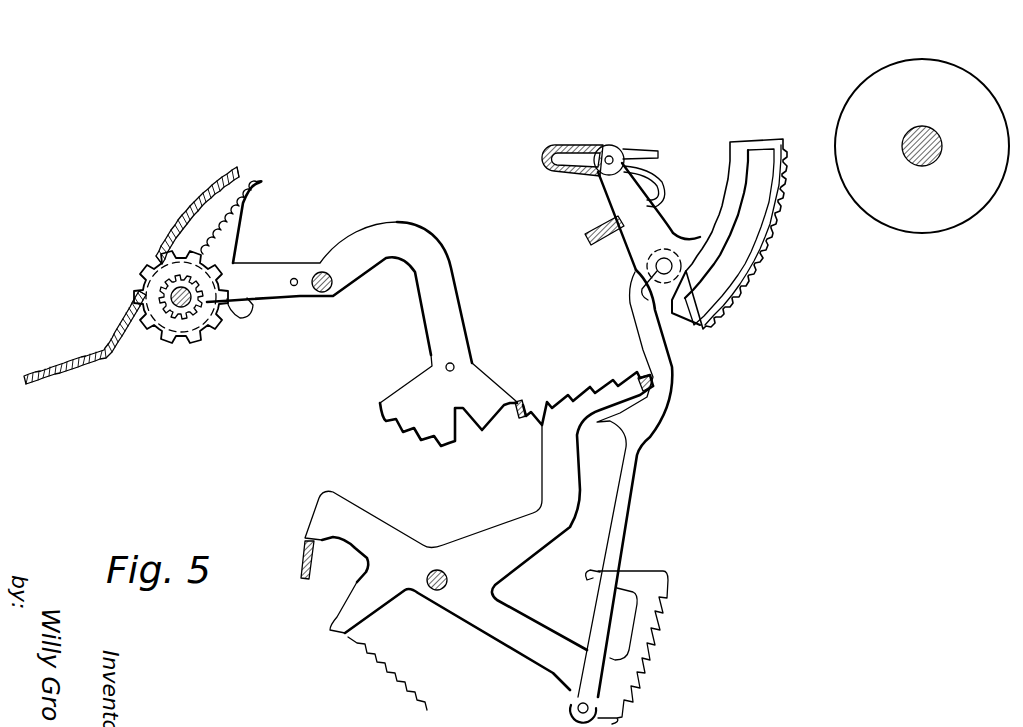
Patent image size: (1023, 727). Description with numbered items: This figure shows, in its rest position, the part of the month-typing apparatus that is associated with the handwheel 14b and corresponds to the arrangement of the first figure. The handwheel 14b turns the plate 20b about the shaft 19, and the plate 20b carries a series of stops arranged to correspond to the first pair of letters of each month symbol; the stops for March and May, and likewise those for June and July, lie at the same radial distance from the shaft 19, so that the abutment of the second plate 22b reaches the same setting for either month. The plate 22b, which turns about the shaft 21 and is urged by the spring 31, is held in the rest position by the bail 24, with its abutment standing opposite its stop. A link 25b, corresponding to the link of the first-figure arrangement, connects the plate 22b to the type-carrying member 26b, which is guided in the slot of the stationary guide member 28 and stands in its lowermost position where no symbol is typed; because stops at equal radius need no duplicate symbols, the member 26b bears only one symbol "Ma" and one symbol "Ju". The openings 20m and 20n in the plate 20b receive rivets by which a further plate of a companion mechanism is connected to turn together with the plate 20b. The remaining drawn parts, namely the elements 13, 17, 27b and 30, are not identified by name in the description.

The pinion 13 is at (183, 285).
The handwheel 14b is at (158, 333).
The pawl 17 is at (241, 312).
The shaft 19 is at (322, 293).
The plate 20b is at (453, 325).
The opening 20m is at (294, 278).
The opening 20n is at (445, 367).
The shaft 21 is at (433, 591).
The plate 22b is at (478, 540).
The bail 24 is at (306, 548).
The lever 25b is at (626, 500).
The type-carrying member 26b is at (710, 232).
The lever 27b is at (612, 159).
The stationary guide member 28 is at (566, 146).
The wheel 30 is at (935, 226).
The spring 31 is at (399, 686).